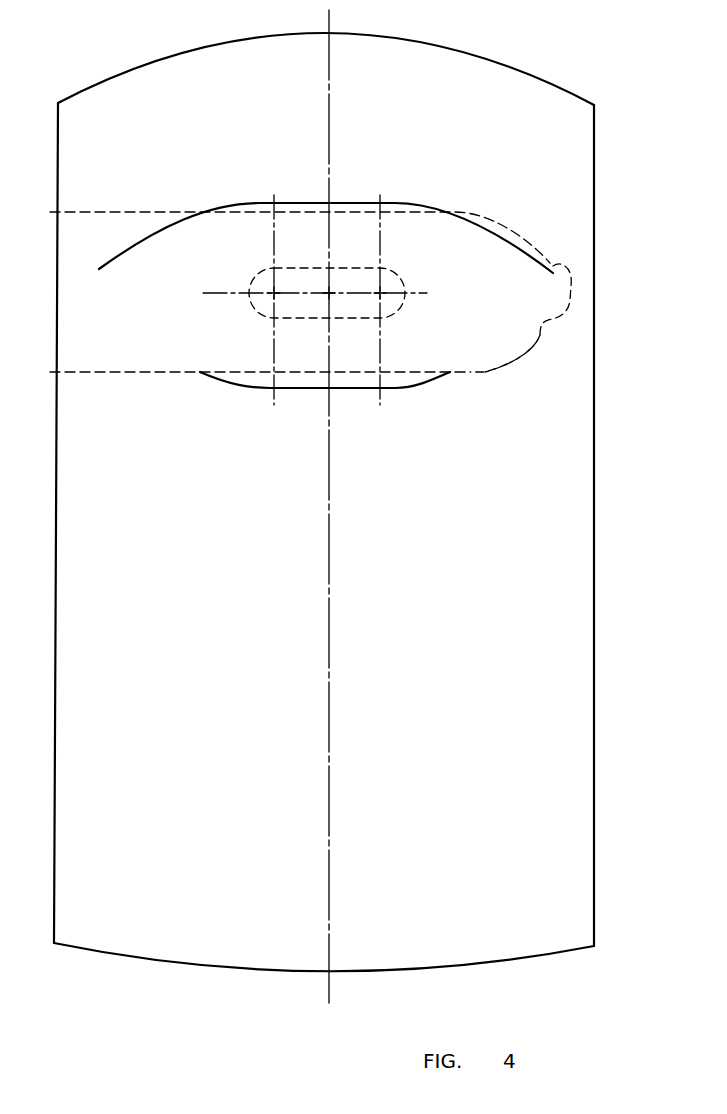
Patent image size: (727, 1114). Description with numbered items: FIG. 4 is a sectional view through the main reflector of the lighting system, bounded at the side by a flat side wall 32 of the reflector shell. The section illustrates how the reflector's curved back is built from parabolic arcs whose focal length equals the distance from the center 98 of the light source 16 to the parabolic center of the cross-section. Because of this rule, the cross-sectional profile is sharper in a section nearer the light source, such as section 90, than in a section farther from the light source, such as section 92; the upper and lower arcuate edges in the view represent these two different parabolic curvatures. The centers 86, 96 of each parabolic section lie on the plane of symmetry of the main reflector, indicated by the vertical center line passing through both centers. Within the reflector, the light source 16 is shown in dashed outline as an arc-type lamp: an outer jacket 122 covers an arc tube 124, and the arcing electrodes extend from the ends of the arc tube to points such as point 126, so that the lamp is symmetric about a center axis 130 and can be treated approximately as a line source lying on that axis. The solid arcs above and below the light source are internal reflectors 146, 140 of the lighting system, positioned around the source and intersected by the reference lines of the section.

The light source 16 is at (467, 383).
The flat side wall 32 is at (597, 527).
The parabolic section center 86 is at (326, 969).
The parabolic section nearer the light source 90 is at (334, 34).
The parabolic section farther from the light source 92 is at (400, 969).
The parabolic section center 96 is at (327, 37).
The light source center 98 is at (331, 292).
The outer jacket 122 is at (540, 337).
The arc tube 124 is at (385, 315).
The electrode end point 126 is at (381, 292).
The center axis 130 is at (235, 292).
The internal reflector 140 is at (300, 390).
The internal reflector 146 is at (334, 203).